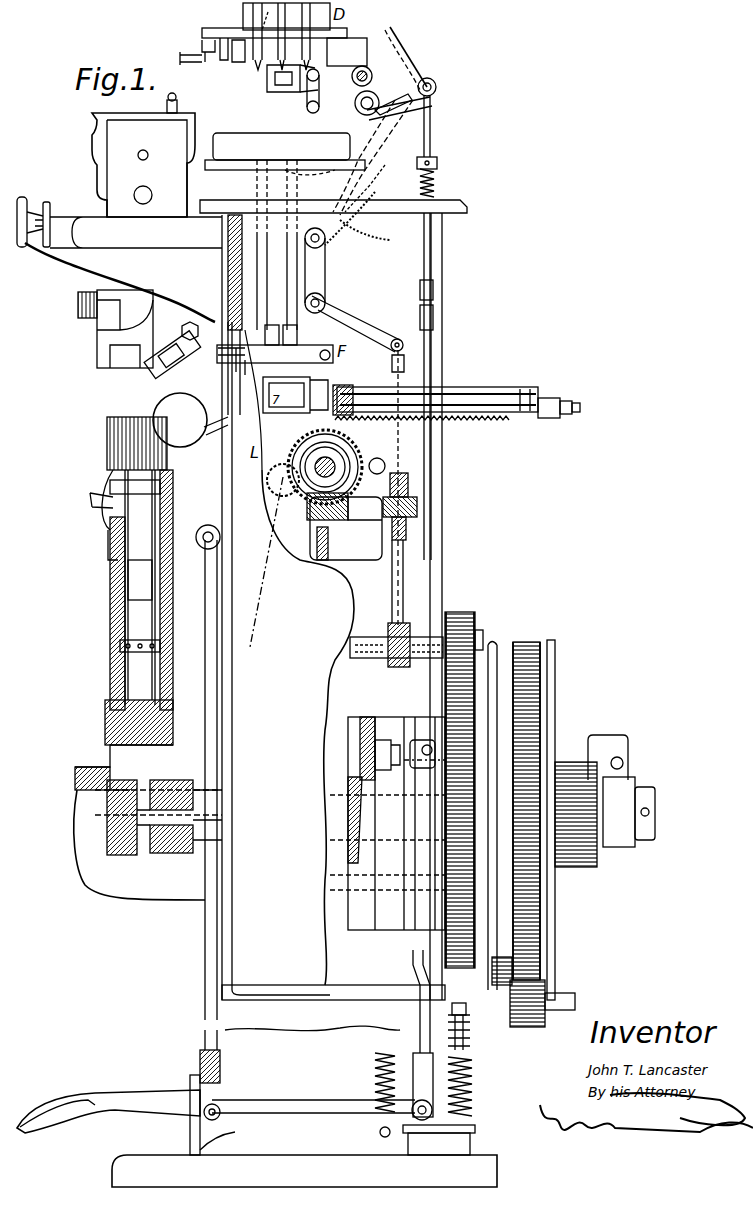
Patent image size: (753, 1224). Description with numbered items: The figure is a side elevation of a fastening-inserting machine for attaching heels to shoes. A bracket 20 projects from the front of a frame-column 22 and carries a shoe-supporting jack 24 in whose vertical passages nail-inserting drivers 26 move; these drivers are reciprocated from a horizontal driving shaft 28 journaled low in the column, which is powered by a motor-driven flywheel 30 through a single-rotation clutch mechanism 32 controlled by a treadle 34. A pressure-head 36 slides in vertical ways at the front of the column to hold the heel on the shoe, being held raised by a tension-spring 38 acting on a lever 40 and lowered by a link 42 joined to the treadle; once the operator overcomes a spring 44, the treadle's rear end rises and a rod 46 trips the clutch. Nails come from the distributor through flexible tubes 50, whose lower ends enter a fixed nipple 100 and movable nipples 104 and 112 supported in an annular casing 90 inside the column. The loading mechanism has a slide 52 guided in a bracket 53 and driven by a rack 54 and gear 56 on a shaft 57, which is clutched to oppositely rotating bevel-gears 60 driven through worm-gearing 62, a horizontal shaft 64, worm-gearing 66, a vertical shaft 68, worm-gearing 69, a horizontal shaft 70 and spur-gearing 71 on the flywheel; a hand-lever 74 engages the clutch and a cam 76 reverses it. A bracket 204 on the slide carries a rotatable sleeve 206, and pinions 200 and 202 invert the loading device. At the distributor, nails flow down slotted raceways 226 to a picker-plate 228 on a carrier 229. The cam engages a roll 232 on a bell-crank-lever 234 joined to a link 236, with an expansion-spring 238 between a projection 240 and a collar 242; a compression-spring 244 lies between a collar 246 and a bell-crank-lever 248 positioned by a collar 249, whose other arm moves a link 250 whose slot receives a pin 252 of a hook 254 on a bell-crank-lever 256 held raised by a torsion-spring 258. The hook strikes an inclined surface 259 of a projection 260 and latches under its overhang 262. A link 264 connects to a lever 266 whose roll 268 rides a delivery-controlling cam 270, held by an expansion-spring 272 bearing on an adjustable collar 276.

The bracket 20 is at (165, 892).
The frame-column 22 is at (222, 965).
The shoe-supporting jack 24 is at (110, 557).
The nail-inserting drivers 26 is at (128, 489).
The horizontal driving shaft 28 is at (185, 810).
The motor-driven flywheel 30 is at (556, 667).
The single-rotation clutch mechanism 32 is at (425, 847).
The treadle 34 is at (78, 1095).
The pressure-head 36 is at (119, 207).
The tension-spring 38 is at (410, 460).
The lever 40 is at (335, 307).
The link 42 is at (217, 674).
The spring 44 is at (468, 1044).
The rod 46 is at (404, 1043).
The flexible tubes 50 is at (313, 174).
The slide 52 is at (548, 422).
The bracket 53 is at (418, 390).
The rack 54 is at (500, 422).
The gear 56 is at (292, 488).
The shaft 57 is at (316, 500).
The bevel-gears 60 is at (293, 480).
The worm-gearing 62 is at (328, 532).
The horizontal shaft 64 is at (362, 522).
The worm-gearing 66 is at (417, 495).
The vertical shaft 68 is at (405, 584).
The worm-gearing 69 is at (410, 667).
The horizontal shaft 70 is at (360, 660).
The spur-gearing 71 is at (466, 662).
The hand-lever 74 is at (203, 439).
The cam 76 is at (408, 478).
The annular casing 90 is at (236, 366).
The nipple 100 is at (297, 337).
The nipples 104 is at (340, 317).
The nipples 112 is at (245, 320).
The pinion 200 is at (350, 387).
The pinion 202 is at (410, 382).
The bracket 204 is at (545, 398).
The sleeve 206 is at (510, 396).
The slotted raceways 226 is at (243, 28).
The picker-plate 228 is at (272, 40).
The carrier 229 is at (200, 64).
The roll 232 is at (240, 420).
The bell-crank-lever 234 is at (330, 370).
The link 236 is at (372, 187).
The expansion-spring 238 is at (368, 243).
The projection 240 is at (355, 230).
The collar 242 is at (340, 272).
The compression-spring 244 is at (432, 142).
The collar 246 is at (396, 121).
The bell-crank-lever 248 is at (285, 184).
The collar 249 is at (436, 94).
The link 250 is at (379, 83).
The pin 252 is at (367, 66).
The hook 254 is at (270, 84).
The bell-crank-lever 256 is at (390, 100).
The torsion-spring 258 is at (395, 47).
The inclined surface 259 is at (270, 16).
The projection 260 is at (300, 95).
The overhang 262 is at (290, 94).
The link 264 is at (440, 235).
The lever 266 is at (360, 792).
The roll 268 is at (380, 764).
The delivery-controlling cam 270 is at (416, 742).
The expansion-spring 272 is at (436, 187).
The adjustable collar 276 is at (437, 162).